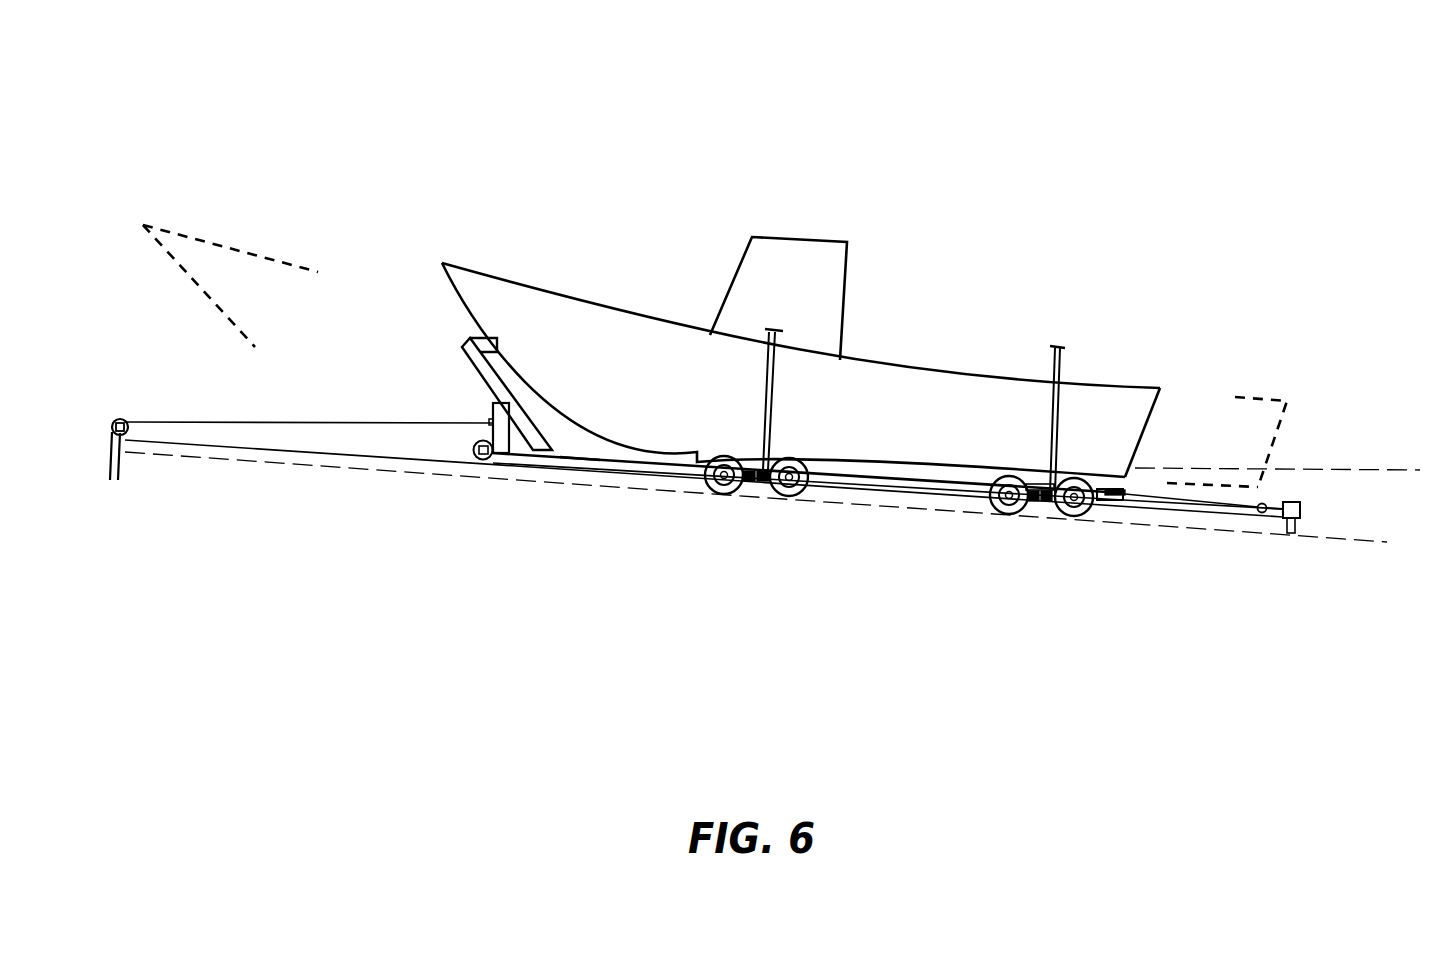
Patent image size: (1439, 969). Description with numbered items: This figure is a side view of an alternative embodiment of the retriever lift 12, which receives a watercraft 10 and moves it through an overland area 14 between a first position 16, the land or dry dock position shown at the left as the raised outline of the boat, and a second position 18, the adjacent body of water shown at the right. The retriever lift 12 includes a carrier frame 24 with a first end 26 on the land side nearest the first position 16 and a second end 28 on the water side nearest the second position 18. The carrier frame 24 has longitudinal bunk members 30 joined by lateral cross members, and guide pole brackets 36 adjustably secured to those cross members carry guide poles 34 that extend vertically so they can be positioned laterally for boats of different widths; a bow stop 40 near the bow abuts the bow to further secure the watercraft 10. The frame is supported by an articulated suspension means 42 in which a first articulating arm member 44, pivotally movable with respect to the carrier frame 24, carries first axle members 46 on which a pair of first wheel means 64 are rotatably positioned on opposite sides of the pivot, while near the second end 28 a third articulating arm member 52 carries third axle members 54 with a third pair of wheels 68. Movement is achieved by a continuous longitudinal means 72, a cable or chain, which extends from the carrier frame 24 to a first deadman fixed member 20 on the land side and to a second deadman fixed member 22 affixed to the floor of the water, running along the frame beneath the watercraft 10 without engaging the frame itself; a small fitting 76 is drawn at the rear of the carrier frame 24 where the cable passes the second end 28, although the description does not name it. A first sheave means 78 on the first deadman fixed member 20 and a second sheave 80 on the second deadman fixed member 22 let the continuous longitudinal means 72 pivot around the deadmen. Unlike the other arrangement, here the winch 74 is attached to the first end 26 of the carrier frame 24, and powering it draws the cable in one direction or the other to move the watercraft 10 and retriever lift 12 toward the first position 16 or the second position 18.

The watercraft 10 is at (612, 306).
The retriever lift 12 is at (368, 302).
The overland area 14 is at (235, 462).
The first position 16 is at (203, 240).
The second position 18 is at (1265, 397).
The first deadman fixed member 20 is at (110, 473).
The second deadman fixed member 22 is at (1297, 527).
The carrier frame 24 is at (625, 478).
The first end 26 is at (492, 460).
The second end 28 is at (1105, 505).
The bunk members 30 is at (582, 457).
The guide poles 34 is at (775, 378).
The guide pole brackets 36 is at (1036, 483).
The bow stop 40 is at (468, 345).
The articulated suspension means 42 is at (763, 492).
The first articulating arm member 44 is at (757, 484).
The first axle members 46 is at (680, 492).
The third articulating arm member 52 is at (1050, 503).
The third axle members 54 is at (1082, 483).
The first wheel means 64 is at (720, 493).
The third pair of wheels 68 is at (1078, 488).
The continuous longitudinal means 72 is at (280, 423).
The winch 74 is at (473, 450).
The rear bracket 76 is at (1117, 492).
The first sheave means 78 is at (120, 420).
The second sheave 80 is at (1263, 504).